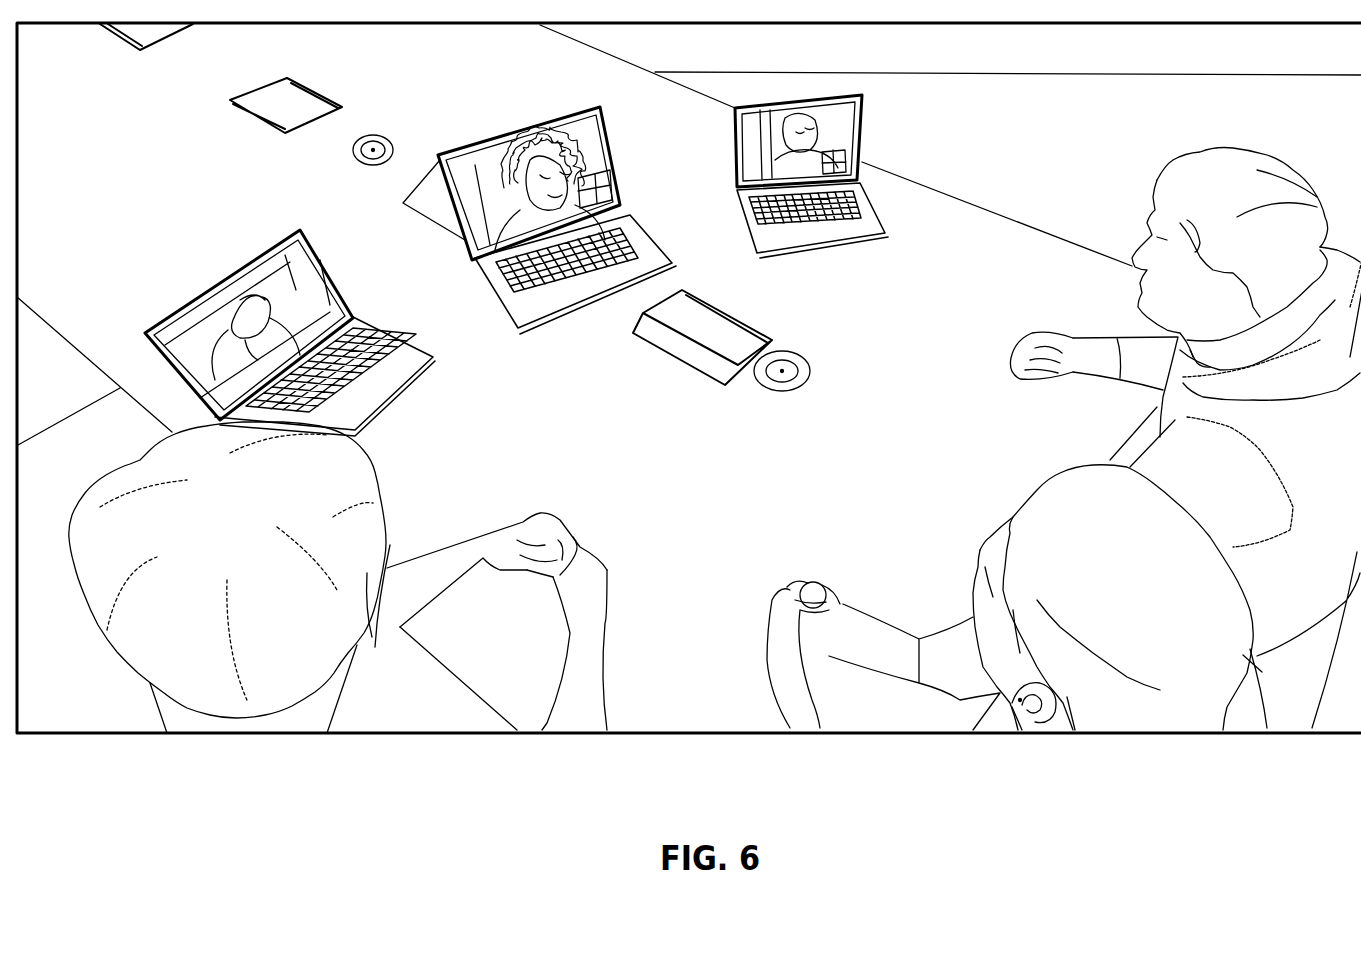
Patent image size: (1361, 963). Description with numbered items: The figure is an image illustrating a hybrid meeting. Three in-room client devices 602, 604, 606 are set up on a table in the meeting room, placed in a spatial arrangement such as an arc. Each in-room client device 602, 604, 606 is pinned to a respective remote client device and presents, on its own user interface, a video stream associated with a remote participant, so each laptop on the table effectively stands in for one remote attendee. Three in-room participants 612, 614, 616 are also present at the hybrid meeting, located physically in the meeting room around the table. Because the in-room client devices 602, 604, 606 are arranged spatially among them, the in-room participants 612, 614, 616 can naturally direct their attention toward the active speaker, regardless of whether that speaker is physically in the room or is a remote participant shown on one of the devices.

The in-room client device 602 is at (190, 295).
The in-room client device 604 is at (490, 140).
The in-room client device 606 is at (730, 158).
The in-room participant 612 is at (593, 680).
The in-room participant 614 is at (935, 622).
The in-room participant 616 is at (1093, 335).